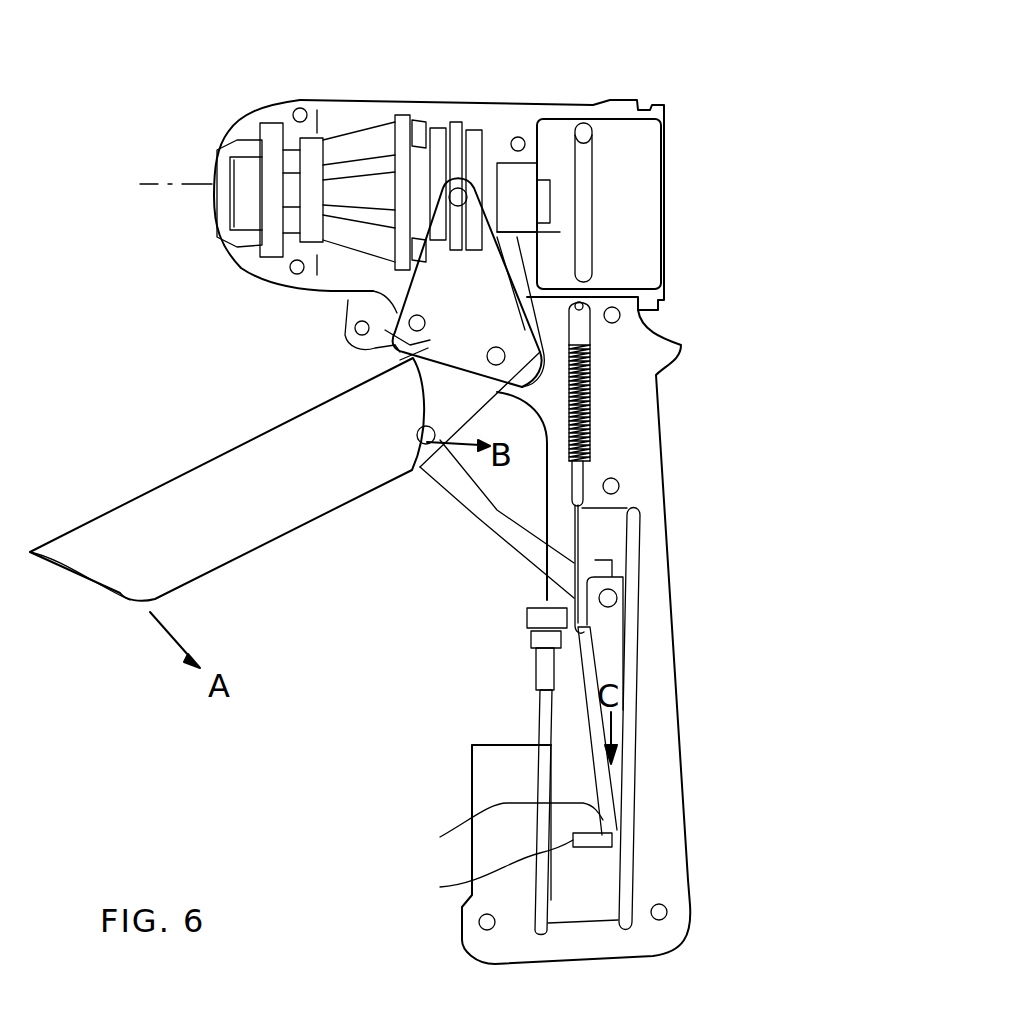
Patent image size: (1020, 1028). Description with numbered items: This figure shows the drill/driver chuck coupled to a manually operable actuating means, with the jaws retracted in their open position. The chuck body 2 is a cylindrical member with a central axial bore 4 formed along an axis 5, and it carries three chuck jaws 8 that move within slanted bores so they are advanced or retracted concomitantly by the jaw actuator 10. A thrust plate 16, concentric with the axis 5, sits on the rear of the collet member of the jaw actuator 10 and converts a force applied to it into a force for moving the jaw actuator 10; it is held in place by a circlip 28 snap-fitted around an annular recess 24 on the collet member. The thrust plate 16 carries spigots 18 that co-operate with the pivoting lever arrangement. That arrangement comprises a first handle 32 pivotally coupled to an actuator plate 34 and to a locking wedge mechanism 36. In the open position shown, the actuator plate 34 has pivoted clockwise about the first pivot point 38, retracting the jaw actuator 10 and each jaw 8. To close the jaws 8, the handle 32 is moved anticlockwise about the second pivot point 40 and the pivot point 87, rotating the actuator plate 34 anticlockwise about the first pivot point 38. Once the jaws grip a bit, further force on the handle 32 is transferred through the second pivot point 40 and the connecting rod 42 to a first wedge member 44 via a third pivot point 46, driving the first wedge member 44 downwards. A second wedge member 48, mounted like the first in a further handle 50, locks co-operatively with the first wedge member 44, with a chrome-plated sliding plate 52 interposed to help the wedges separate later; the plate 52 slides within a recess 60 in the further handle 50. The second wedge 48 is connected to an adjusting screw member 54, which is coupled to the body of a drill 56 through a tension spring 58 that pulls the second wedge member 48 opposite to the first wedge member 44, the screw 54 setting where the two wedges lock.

The chuck body 2 is at (233, 228).
The central axial bore 4 is at (207, 162).
The axis 5 is at (175, 184).
The chuck jaws 8 is at (390, 145).
The jaw actuator 10 is at (405, 145).
The thrust plate 16 is at (455, 140).
The spigots 18 is at (508, 140).
The annular recess 24 is at (440, 150).
The circlip 28 is at (485, 140).
The first handle 32 is at (202, 558).
The actuator plate 34 is at (347, 315).
The locking wedge mechanism 36 is at (485, 674).
The first pivot point 38 is at (392, 350).
The second pivot point 40 is at (422, 448).
The connecting rod 42 is at (491, 517).
The first wedge member 44 is at (625, 661).
The third pivot point 46 is at (618, 598).
The second wedge member 48 is at (548, 742).
The further handle 50 is at (660, 422).
The sliding plate 52 is at (440, 837).
The adjusting screw member 54 is at (527, 617).
The body of a drill 56 is at (620, 100).
The tension spring 58 is at (592, 375).
The recess 60 is at (440, 887).
The pivot point 87 is at (496, 347).